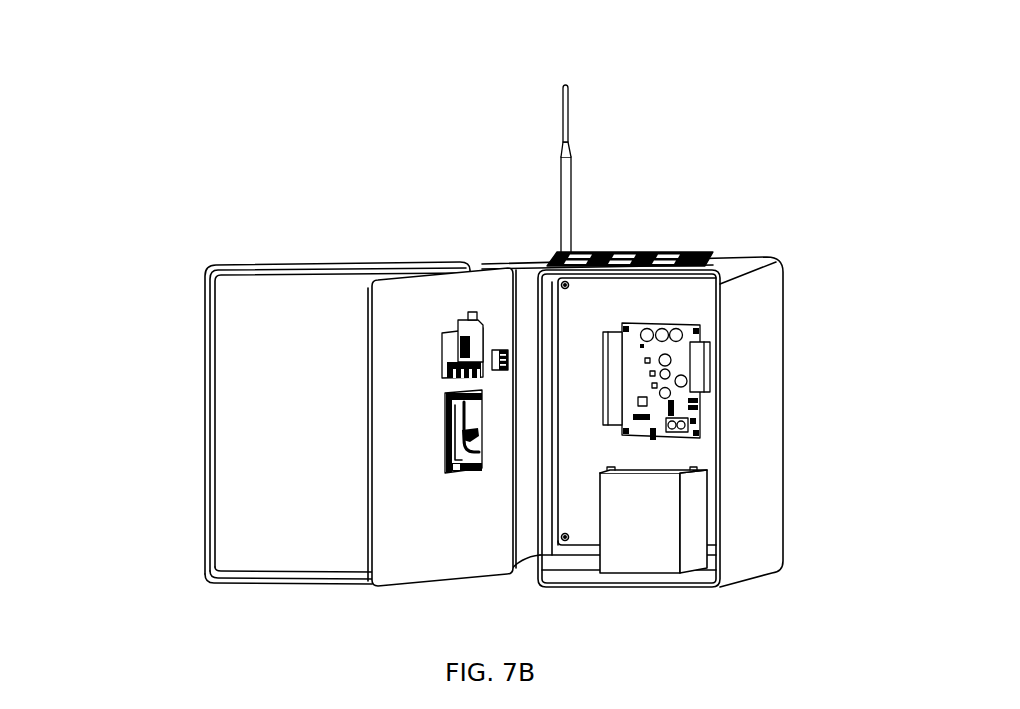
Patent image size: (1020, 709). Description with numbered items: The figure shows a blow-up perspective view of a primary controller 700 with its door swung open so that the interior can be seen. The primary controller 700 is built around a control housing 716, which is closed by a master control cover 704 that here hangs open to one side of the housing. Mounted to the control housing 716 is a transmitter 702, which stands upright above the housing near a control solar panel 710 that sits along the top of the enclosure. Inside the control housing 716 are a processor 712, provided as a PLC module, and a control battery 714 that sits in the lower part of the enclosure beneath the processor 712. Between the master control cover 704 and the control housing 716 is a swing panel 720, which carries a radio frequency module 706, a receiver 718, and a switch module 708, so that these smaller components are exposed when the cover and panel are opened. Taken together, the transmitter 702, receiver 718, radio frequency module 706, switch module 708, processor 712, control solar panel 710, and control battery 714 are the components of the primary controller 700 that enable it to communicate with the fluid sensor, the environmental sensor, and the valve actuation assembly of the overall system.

The primary controller 700 is at (463, 345).
The transmitter 702 is at (567, 173).
The master control cover 704 is at (262, 300).
The radio frequency module 706 is at (442, 427).
The switch module 708 is at (508, 350).
The control solar panel 710 is at (640, 250).
The processor 712 is at (678, 343).
The control battery 714 is at (665, 497).
The control housing 716 is at (743, 577).
The receiver 718 is at (467, 333).
The swing panel 720 is at (400, 545).